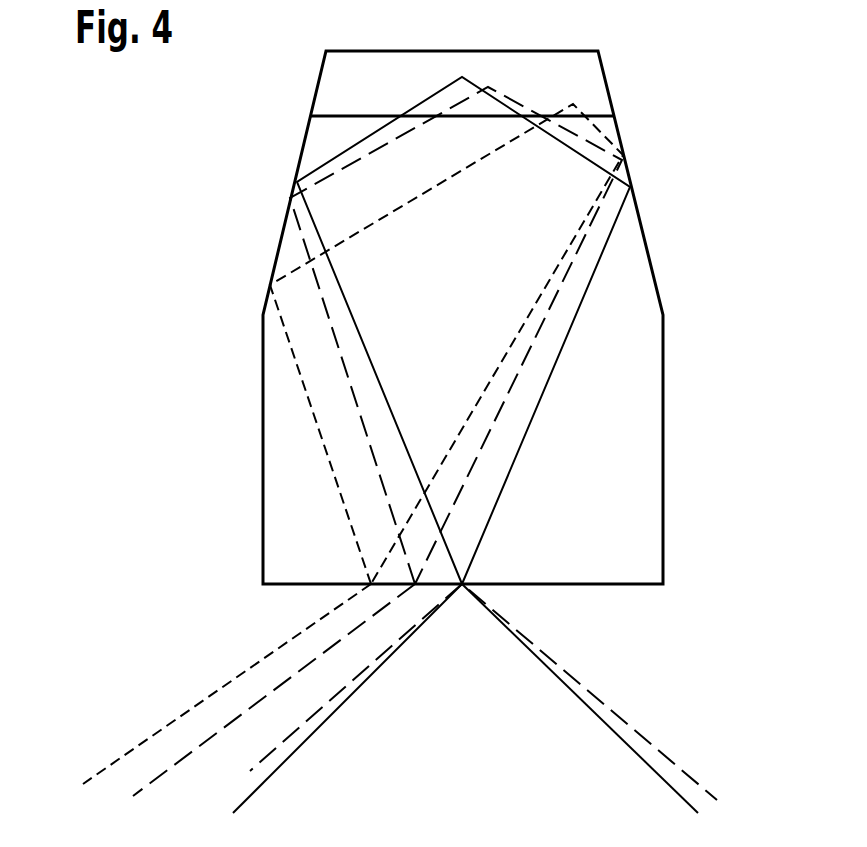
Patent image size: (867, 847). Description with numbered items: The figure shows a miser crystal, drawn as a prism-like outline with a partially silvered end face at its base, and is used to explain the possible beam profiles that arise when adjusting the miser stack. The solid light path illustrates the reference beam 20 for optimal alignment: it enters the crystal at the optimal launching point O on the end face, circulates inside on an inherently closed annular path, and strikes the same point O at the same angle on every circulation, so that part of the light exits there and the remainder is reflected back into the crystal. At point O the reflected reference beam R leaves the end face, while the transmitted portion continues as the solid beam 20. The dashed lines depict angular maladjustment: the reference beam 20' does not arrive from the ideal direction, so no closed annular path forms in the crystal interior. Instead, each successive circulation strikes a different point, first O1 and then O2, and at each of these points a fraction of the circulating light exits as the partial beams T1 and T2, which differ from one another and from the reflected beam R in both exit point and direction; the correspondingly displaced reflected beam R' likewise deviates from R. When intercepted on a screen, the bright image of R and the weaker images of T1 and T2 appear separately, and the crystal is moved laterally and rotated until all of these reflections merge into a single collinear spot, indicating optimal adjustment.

The optimal launching point O is at (464, 587).
The striking point O1 is at (417, 586).
The striking point O2 is at (370, 582).
The reflected reference beam R is at (347, 709).
The reflected reference beam R' is at (325, 695).
The partial beam T1 is at (140, 794).
The partial beam T2 is at (93, 778).
The reference beam 20 is at (580, 707).
The reference beam 20' is at (597, 692).